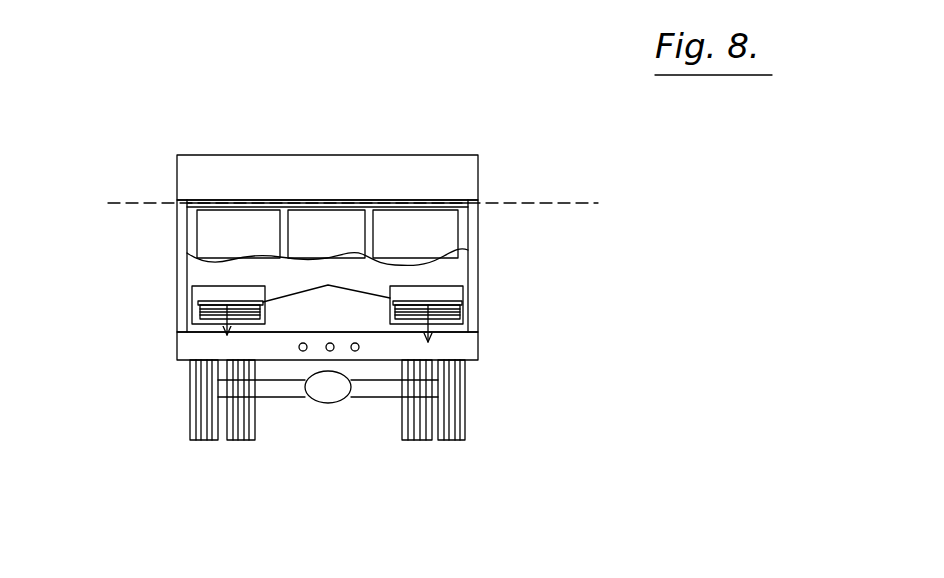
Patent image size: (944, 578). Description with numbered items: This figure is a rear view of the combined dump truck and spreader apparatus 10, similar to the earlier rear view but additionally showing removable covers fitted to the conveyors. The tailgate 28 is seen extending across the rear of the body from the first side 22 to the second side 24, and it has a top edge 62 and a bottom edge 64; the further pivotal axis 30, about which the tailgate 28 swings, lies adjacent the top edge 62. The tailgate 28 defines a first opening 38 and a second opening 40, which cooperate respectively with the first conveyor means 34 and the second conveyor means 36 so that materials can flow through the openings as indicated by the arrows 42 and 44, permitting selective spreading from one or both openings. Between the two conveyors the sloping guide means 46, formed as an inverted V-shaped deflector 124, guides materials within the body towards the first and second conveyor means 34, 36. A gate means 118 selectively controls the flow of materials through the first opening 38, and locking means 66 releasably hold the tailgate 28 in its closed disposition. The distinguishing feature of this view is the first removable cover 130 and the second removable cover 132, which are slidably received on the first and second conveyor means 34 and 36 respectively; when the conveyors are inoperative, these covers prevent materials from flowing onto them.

The combined dump truck and spreader apparatus 10 is at (372, 98).
The first side 22 is at (130, 200).
The second side 24 is at (472, 212).
The tailgate 28 is at (435, 232).
The further pivotal axis 30 is at (572, 203).
The first conveyor means 34 is at (250, 313).
The second conveyor means 36 is at (403, 314).
The first opening 38 is at (196, 286).
The second opening 40 is at (465, 299).
The arrow 42 is at (198, 320).
The arrow 44 is at (433, 335).
The sloping guide means 46 is at (360, 280).
The top edge 62 is at (328, 203).
The bottom edge 64 is at (277, 333).
The locking means 66 is at (460, 331).
The gate means 118 is at (197, 296).
The inverted V-shaped deflector 124 is at (297, 287).
The first removable cover 130 is at (218, 302).
The second removable cover 132 is at (413, 300).